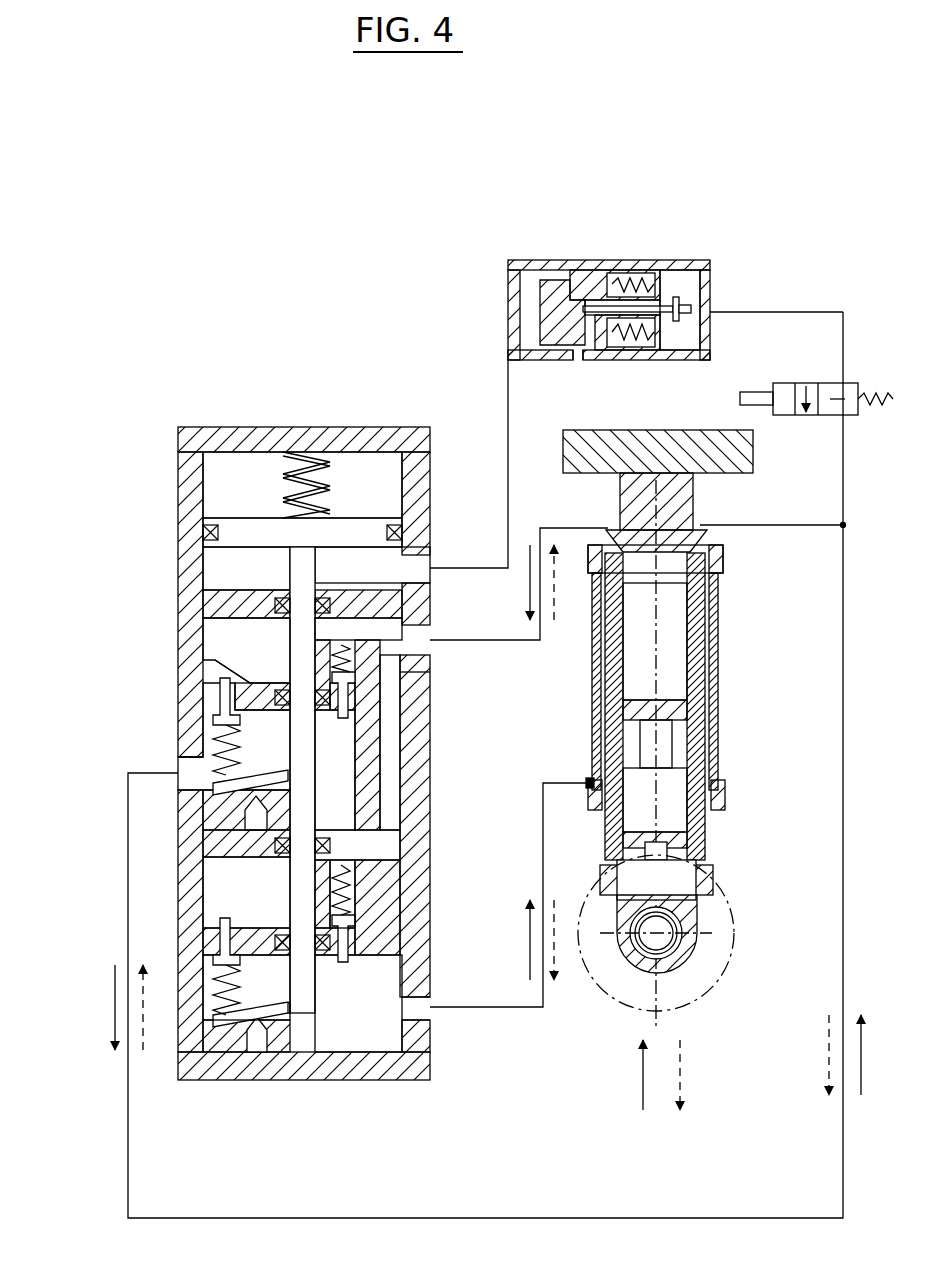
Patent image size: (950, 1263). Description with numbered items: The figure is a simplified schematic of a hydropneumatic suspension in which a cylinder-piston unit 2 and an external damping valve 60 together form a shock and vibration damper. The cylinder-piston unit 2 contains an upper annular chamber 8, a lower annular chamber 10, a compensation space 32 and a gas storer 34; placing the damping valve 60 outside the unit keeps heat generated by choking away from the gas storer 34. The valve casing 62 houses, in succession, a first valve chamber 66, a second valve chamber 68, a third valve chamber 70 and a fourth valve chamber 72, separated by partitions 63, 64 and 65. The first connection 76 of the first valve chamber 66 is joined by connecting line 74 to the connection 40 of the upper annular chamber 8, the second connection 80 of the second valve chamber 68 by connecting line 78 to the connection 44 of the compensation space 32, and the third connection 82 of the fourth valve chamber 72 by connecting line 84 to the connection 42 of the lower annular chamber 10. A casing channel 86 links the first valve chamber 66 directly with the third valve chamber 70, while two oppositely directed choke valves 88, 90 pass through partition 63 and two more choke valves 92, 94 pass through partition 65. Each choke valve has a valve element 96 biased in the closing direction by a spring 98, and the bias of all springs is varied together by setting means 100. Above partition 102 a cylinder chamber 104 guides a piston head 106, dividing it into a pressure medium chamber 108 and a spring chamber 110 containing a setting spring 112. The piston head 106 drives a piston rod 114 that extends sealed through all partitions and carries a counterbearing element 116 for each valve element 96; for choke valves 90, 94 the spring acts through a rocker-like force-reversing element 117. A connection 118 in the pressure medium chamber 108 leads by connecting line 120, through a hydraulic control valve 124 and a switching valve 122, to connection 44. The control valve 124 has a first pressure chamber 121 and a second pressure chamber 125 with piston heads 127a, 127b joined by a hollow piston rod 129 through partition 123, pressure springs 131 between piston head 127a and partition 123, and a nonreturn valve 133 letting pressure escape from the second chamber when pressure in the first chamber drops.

The cylinder-piston unit 2 is at (733, 888).
The upper annular chamber 8 is at (720, 582).
The lower annular chamber 10 is at (707, 762).
The compensation space 32 is at (670, 673).
The gas storer 34 is at (700, 855).
The connection of the upper annular chamber 40 is at (618, 512).
The connection of the lower annular chamber 42 is at (595, 790).
The connection of the compensation space 44 is at (680, 477).
The damping valve 60 is at (260, 412).
The valve casing 62 is at (126, 826).
The partition 63 is at (150, 663).
The partition 64 is at (170, 856).
The partition 65 is at (406, 905).
The first valve chamber 66 is at (262, 659).
The second valve chamber 68 is at (349, 784).
The third valve chamber 70 is at (252, 902).
The fourth valve chamber 72 is at (364, 1029).
The connecting line 74 is at (529, 616).
The first connection 76 is at (514, 584).
The connecting line 78 is at (128, 905).
The second connection 80 is at (126, 784).
The third connection 82 is at (450, 1026).
The connecting line 84 is at (509, 922).
The casing channel 86 is at (446, 826).
The choke valve 88 is at (430, 672).
The choke valve 90 is at (170, 736).
The choke valve 92 is at (414, 894).
The choke valve 94 is at (170, 987).
The valve element 96 is at (222, 690).
The spring 98 is at (215, 762).
The setting means 100 is at (308, 465).
The partition 102 is at (130, 604).
The cylinder chamber 104 is at (235, 472).
The piston head 106 is at (221, 510).
The pressure medium chamber 108 is at (366, 582).
The spring chamber 110 is at (252, 504).
The setting spring 112 is at (321, 429).
The piston rod 114 is at (276, 766).
The counterbearing element 116 is at (357, 850).
The force-reversing element 117 is at (232, 1150).
The connection 118 is at (467, 464).
The connecting line 120 is at (870, 347).
The first pressure chamber 121 is at (682, 299).
The switching valve 122 is at (846, 418).
The partition 123 is at (580, 360).
The hydraulic control valve 124 is at (621, 256).
The second pressure chamber 125 is at (568, 287).
The piston head 127a is at (668, 355).
The piston head 127b is at (550, 295).
The piston rod 129 is at (583, 300).
The pressure spring 131 is at (647, 282).
The nonreturn valve 133 is at (765, 299).